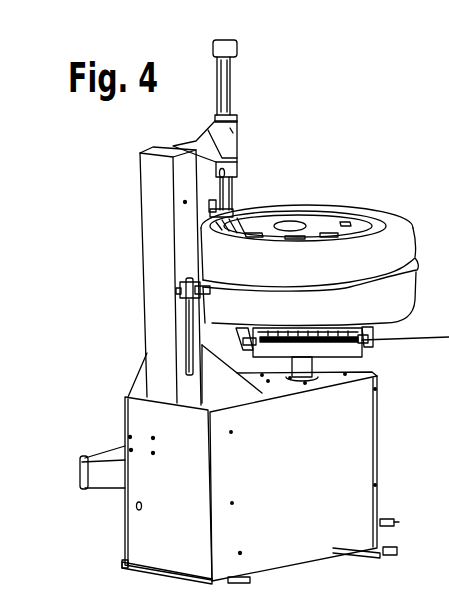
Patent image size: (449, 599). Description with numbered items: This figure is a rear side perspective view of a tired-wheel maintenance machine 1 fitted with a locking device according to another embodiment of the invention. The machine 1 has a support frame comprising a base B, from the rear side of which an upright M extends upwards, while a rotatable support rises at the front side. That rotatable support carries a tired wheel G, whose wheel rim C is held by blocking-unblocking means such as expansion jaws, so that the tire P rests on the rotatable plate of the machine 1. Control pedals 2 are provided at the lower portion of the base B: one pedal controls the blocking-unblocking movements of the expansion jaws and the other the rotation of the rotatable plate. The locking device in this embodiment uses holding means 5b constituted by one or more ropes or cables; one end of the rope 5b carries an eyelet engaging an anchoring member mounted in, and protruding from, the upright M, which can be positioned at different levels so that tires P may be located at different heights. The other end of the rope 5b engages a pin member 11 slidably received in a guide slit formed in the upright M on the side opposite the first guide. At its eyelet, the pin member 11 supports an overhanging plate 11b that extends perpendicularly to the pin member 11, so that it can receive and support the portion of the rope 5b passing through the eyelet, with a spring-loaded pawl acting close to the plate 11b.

The tired-wheel maintenance machine 1 is at (120, 511).
The control pedals 2 is at (385, 521).
The upright M is at (158, 199).
The base B is at (150, 417).
The pin member 11 is at (182, 285).
The overhanging plate 11b is at (182, 297).
The tired wheel G is at (267, 205).
The wheel rim C is at (287, 220).
The tire P is at (330, 257).
The holding means (rope or cable) 5b is at (392, 267).